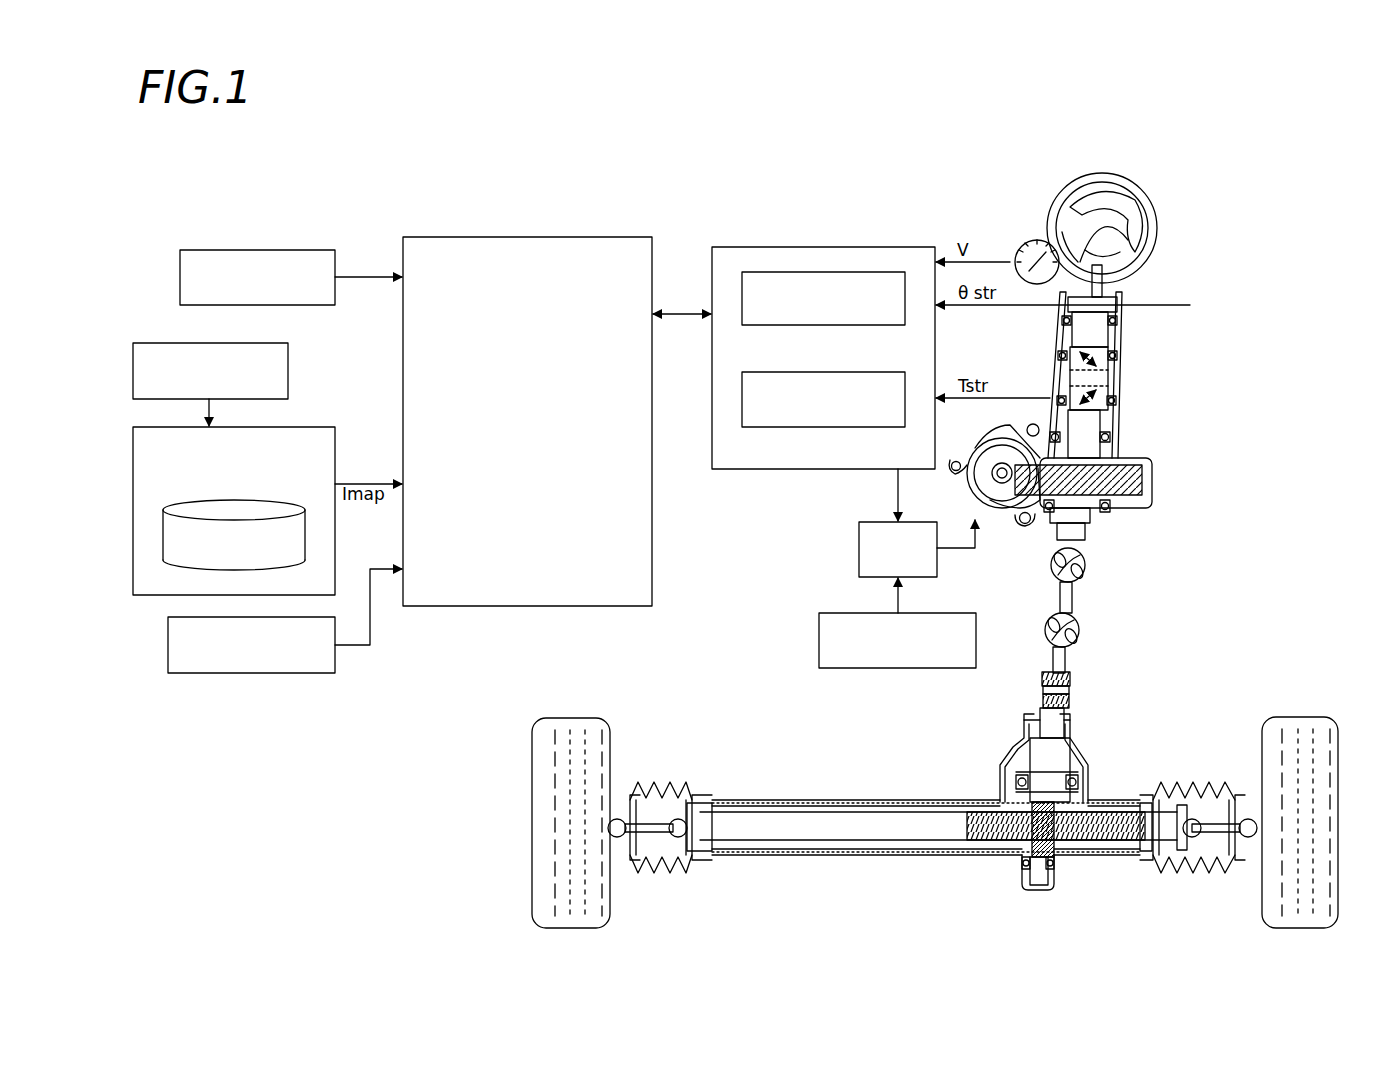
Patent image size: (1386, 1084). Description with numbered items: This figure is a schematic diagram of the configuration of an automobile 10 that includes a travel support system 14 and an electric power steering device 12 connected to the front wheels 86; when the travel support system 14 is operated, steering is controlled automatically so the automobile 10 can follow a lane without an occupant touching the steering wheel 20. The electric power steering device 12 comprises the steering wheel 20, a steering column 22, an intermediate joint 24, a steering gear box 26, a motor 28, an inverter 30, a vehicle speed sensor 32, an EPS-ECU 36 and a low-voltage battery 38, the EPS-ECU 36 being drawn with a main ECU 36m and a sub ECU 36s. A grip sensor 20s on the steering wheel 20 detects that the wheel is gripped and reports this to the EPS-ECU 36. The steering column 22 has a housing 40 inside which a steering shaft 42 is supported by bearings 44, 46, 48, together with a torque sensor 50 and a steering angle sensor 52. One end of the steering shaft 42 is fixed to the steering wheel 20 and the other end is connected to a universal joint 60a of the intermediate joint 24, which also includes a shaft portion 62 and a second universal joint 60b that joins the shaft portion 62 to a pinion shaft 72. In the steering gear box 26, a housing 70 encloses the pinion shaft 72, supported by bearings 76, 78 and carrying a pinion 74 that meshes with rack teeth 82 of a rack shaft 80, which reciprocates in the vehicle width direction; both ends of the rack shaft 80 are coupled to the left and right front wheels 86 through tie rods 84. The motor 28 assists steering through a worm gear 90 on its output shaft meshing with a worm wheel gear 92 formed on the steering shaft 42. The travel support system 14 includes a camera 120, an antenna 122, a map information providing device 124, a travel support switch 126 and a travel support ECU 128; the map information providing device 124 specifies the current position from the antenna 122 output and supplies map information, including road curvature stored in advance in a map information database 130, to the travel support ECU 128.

The automobile 10 is at (1233, 254).
The electric power steering device 12 is at (1222, 289).
The travel support system 14 is at (150, 634).
The steering wheel 20 is at (1056, 206).
The grip sensor 20s is at (1140, 196).
The steering column 22 is at (1130, 333).
The intermediate joint 24 is at (1157, 600).
The steering gear box 26 is at (770, 858).
The motor 28 is at (993, 520).
The inverter 30 is at (923, 529).
The vehicle speed sensor 32 is at (1018, 246).
The electric power steering electronic control unit 36 is at (735, 247).
The main ECU 36m is at (835, 272).
The sub ECU 36s is at (742, 400).
The low-voltage battery 38 is at (943, 668).
The housing 40 is at (1148, 512).
The steering shaft 42 is at (1116, 418).
The bearing 44 is at (1066, 322).
The bearing 46 is at (1119, 441).
The bearing 48 is at (1109, 515).
The torque sensor 50 is at (1113, 405).
The steering angle sensor 52 is at (1142, 308).
The universal joint 60a is at (1074, 573).
The universal joint 60b is at (1081, 628).
The shaft portion 62 is at (1073, 597).
The housing 70 is at (890, 855).
The pinion shaft 72 is at (1069, 703).
The pinion 74 is at (1040, 891).
The bearing 76 is at (1014, 780).
The bearing 78 is at (1021, 875).
The rack shaft 80 is at (848, 840).
The rack teeth 82 is at (1094, 842).
The tie rods 84 is at (663, 862).
The front wheels 86 is at (545, 748).
The worm gear 90 is at (1005, 486).
The worm wheel gear 92 is at (1136, 484).
The camera 120 is at (300, 250).
The antenna 122 is at (152, 343).
The map information providing device 124 is at (306, 427).
The travel support switch 126 is at (293, 673).
The travel support electronic control device 128 is at (425, 237).
The map information database 130 is at (200, 504).